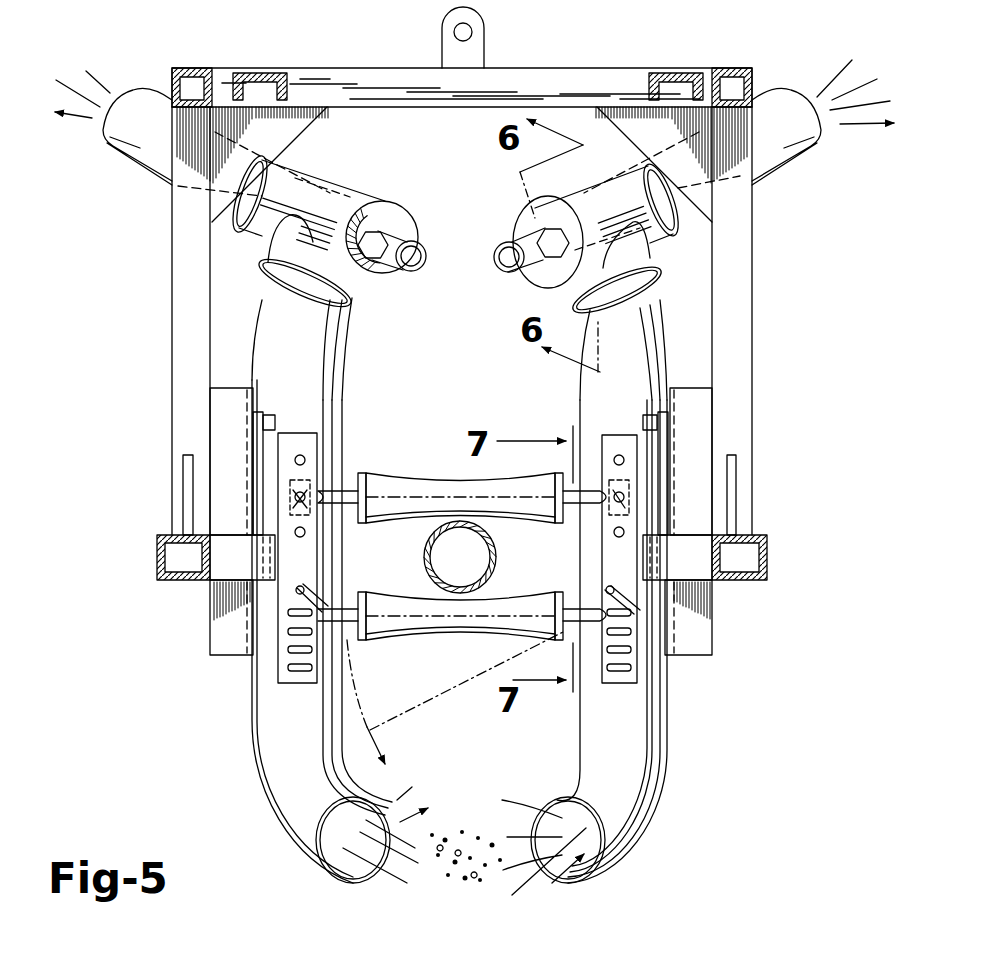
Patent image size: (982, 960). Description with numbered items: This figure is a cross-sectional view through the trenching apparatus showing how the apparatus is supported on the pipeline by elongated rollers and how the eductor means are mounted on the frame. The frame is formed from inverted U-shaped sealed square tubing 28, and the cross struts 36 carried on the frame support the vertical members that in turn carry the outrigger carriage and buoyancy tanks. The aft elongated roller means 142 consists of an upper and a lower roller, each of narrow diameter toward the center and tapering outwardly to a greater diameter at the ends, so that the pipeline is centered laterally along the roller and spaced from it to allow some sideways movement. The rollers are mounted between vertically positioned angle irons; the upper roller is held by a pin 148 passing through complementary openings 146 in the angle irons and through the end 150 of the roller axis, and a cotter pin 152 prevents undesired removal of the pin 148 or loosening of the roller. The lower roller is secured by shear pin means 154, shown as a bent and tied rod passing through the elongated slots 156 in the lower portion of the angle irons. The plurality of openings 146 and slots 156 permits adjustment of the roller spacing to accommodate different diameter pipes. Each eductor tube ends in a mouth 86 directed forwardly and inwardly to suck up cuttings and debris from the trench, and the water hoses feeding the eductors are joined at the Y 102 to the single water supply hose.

The inverted U-shaped sealed square tubing 28 is at (578, 72).
The cross struts 36 is at (280, 72).
The mouth of eductor tube 86 is at (372, 812).
The Y 102 is at (497, 260).
The aft elongated roller means 142 is at (395, 483).
The openings 146 is at (303, 458).
The pin 148 is at (306, 494).
The end of roller axis 150 is at (342, 534).
The cotter pin 152 is at (615, 494).
The shear pin means 154 is at (598, 598).
The elongated slots 156 is at (290, 677).